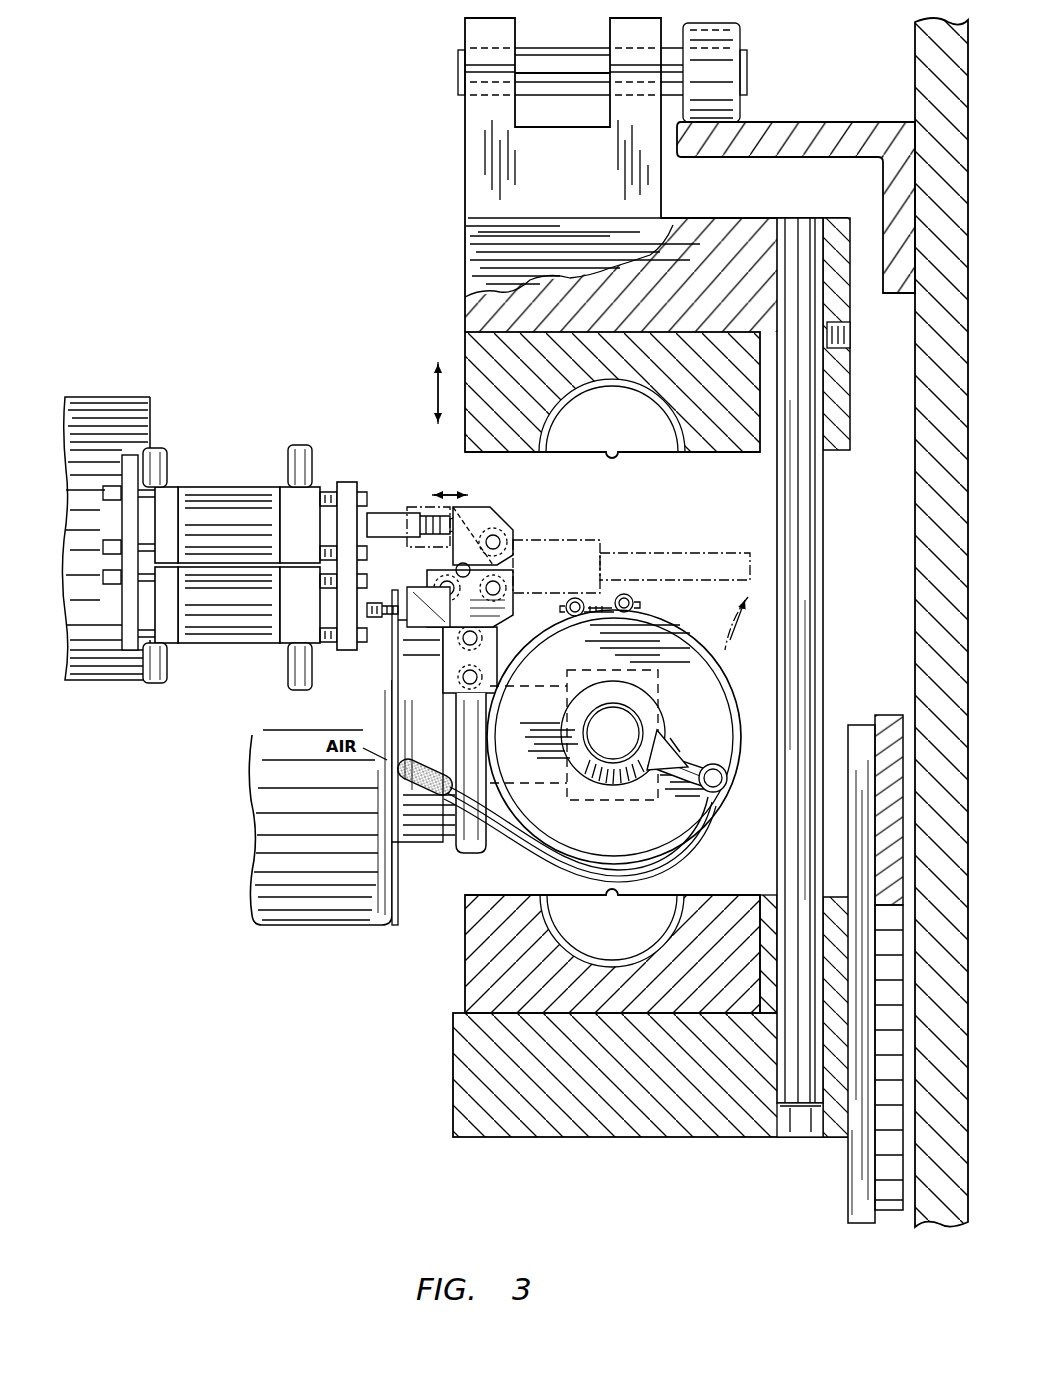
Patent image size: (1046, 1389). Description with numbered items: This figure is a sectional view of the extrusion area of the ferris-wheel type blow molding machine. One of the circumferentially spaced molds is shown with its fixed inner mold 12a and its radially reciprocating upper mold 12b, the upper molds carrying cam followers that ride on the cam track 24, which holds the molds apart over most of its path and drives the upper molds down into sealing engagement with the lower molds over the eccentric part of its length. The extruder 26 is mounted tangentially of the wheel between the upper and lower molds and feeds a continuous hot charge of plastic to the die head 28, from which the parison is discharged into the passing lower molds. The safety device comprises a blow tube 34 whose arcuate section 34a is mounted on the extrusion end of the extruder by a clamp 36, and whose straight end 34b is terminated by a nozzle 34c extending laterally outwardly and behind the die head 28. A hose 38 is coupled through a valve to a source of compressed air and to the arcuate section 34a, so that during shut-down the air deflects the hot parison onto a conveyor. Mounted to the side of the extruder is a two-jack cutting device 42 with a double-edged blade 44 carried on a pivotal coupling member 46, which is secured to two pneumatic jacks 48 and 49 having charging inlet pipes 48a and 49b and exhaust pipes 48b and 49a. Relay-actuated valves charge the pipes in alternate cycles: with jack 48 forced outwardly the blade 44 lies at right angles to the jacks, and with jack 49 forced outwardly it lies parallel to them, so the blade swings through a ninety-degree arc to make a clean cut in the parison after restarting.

The fixed inner mold 12a is at (470, 957).
The upper mold 12b is at (470, 356).
The cam track 24 is at (770, 128).
The extruder 26 is at (677, 647).
The die head 28 is at (597, 703).
The blow tube 34 is at (656, 843).
The arcuate section 34a is at (700, 826).
The straight end 34b is at (688, 760).
The nozzle 34c is at (670, 738).
The clamp 36 is at (575, 860).
The hose 38 is at (430, 762).
The two-jack cutting device 42 is at (214, 482).
The double-edged blade 44 is at (655, 548).
The pivotal coupling member 46 is at (497, 566).
The pneumatic jack 48 is at (390, 514).
The charging inlet pipe 48a is at (310, 470).
The exhaust pipe 48b is at (160, 452).
The pneumatic jack 49 is at (385, 625).
The exhaust pipe 49a is at (300, 690).
The charging inlet pipe 49b is at (160, 684).